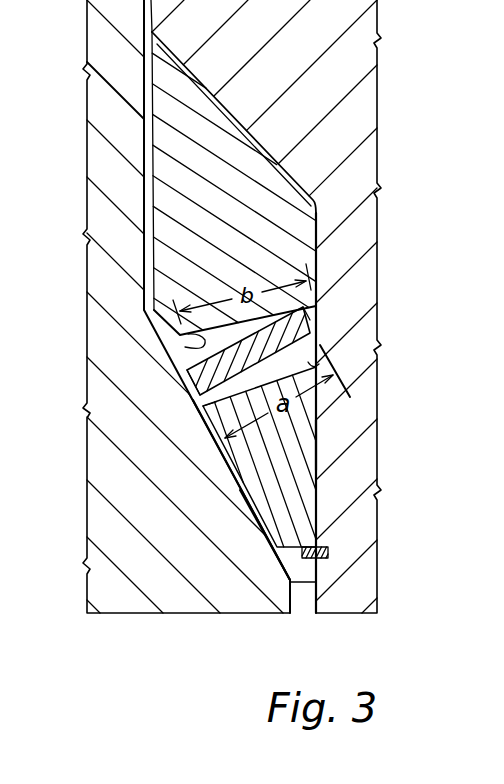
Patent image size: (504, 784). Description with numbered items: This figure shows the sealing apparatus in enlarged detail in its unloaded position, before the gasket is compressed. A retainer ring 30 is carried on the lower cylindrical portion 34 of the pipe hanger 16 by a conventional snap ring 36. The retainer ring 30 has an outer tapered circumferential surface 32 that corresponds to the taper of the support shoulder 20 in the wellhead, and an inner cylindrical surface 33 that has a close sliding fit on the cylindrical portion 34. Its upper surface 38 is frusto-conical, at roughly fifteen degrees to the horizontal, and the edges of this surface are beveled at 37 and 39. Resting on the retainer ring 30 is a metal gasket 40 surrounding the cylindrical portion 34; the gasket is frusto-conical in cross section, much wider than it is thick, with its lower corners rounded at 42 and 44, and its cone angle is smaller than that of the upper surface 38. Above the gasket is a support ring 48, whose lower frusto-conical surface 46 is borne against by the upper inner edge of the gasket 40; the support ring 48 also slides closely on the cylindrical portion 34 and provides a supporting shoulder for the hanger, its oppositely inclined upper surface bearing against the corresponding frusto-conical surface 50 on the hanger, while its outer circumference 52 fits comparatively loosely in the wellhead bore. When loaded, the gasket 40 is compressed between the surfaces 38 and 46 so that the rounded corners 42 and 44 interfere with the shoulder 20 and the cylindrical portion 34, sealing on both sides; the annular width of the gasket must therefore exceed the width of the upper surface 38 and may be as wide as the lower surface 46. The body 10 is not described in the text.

The tool holder body 10 is at (146, 603).
The pipe hanger 16 is at (340, 58).
The support shoulder 20 is at (262, 518).
The retainer ring 30 is at (292, 466).
The outer tapered circumferential surface 32 is at (262, 518).
The inner cylindrical surface 33 is at (340, 412).
The lower cylindrical portion 34 is at (336, 443).
The snap ring 36 is at (326, 556).
The bevel 37 is at (203, 400).
The upper surface 38 is at (302, 340).
The bevel 39 is at (318, 368).
The metal gasket 40 is at (207, 362).
The rounded corner 42 is at (195, 402).
The rounded corner 44 is at (316, 336).
The lower frusto-conical surface 46 is at (185, 347).
The support ring 48 is at (288, 240).
The frusto-conical surface 50 is at (272, 163).
The outer circumference 52 is at (150, 162).